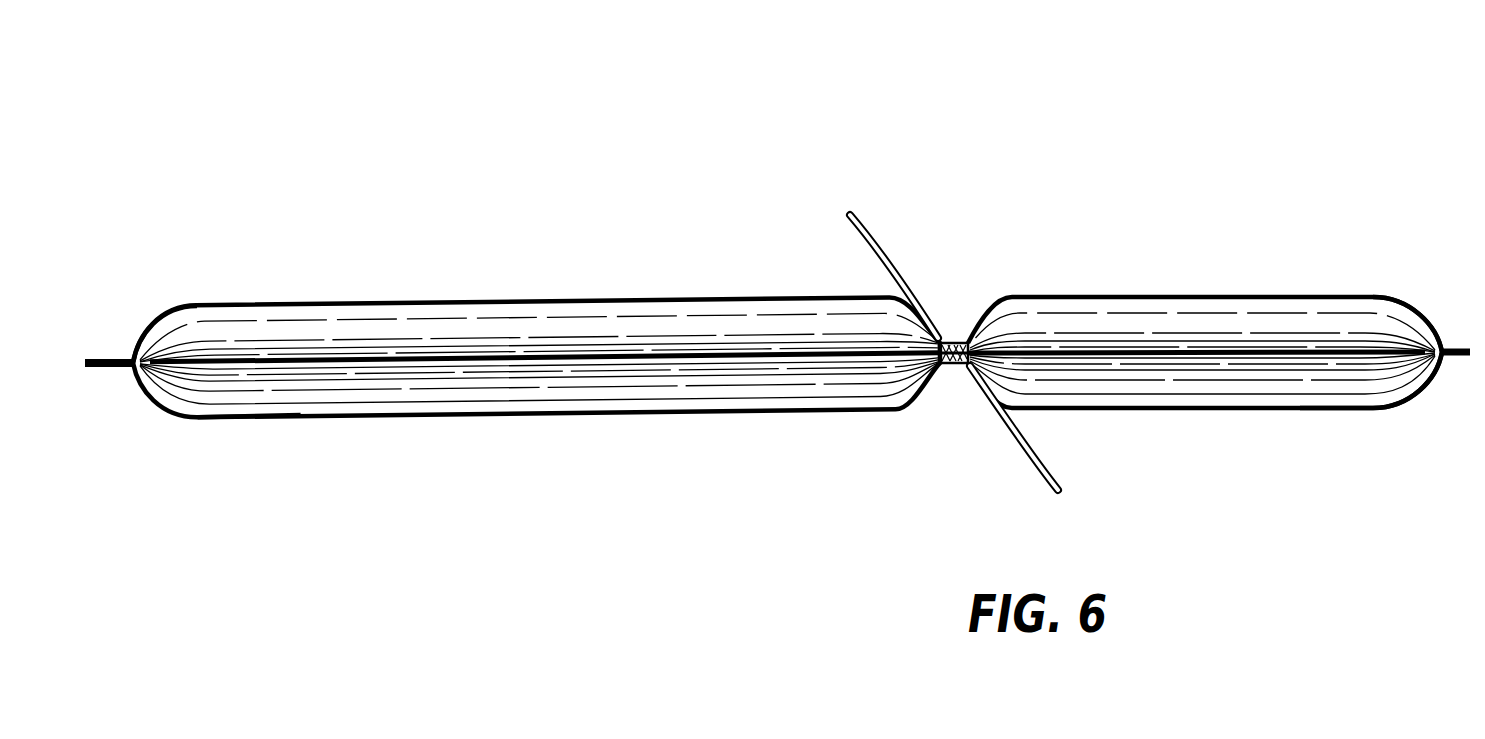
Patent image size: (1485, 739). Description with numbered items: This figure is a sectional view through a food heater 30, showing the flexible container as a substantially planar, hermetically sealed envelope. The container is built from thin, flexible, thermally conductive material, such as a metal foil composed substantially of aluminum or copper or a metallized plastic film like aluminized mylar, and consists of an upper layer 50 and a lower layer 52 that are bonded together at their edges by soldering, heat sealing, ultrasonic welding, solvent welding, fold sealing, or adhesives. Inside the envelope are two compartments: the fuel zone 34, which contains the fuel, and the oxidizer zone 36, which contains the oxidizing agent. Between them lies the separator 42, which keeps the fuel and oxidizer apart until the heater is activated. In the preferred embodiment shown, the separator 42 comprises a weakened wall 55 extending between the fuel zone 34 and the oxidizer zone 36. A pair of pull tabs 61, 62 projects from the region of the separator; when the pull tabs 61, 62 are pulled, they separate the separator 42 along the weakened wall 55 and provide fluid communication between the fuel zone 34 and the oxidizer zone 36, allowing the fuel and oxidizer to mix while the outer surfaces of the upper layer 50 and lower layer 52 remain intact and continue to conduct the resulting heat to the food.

The food heater 30 is at (766, 169).
The fuel zone 34 is at (1220, 390).
The oxidizer zone 36 is at (637, 320).
The separator 42 is at (962, 366).
The upper layer 50 is at (397, 300).
The lower layer 52 is at (417, 418).
The weakened wall 55 is at (955, 342).
The pull tab 61 is at (870, 213).
The pull tab 62 is at (1032, 470).